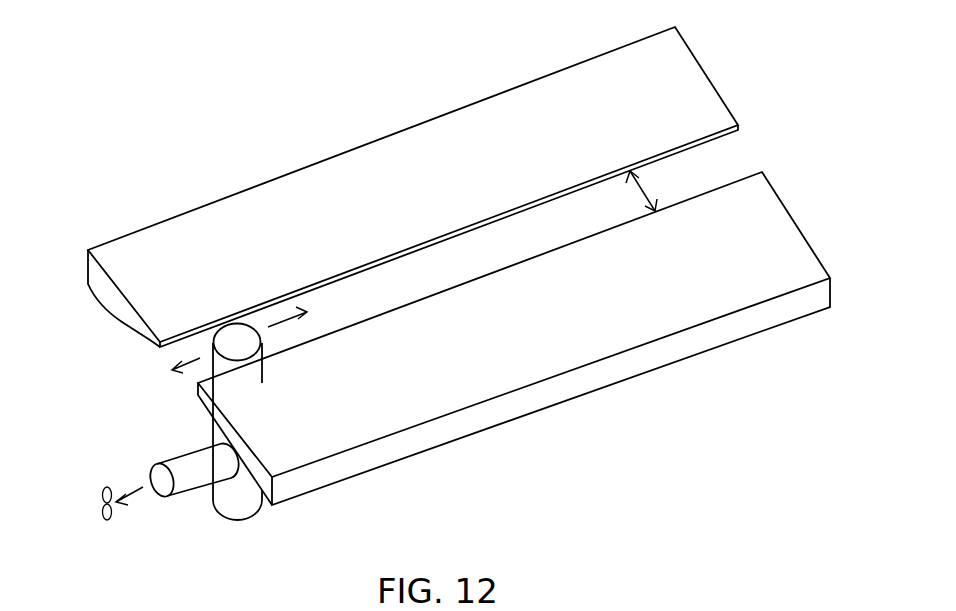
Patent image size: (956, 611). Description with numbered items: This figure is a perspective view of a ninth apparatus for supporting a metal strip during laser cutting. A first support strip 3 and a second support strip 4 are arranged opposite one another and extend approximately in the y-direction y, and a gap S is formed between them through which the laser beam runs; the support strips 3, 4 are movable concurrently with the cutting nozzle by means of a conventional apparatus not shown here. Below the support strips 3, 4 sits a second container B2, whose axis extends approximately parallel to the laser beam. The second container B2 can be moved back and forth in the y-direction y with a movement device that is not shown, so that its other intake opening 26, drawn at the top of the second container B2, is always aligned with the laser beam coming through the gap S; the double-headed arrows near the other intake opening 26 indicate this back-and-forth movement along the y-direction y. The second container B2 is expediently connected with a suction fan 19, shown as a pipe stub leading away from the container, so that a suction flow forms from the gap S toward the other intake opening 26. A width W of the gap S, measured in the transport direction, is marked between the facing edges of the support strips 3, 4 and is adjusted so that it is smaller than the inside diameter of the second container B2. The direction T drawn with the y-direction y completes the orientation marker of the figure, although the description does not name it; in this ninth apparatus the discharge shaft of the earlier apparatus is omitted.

The first support strip 3 is at (481, 147).
The second support strip 4 is at (660, 317).
The other intake opening 26 is at (232, 342).
The suction fan 19 is at (107, 487).
The second container B2 is at (227, 507).
The width of the gap W is at (643, 182).
The gap S is at (735, 163).
The y-direction y is at (158, 60).
The T-direction axis T is at (158, 60).